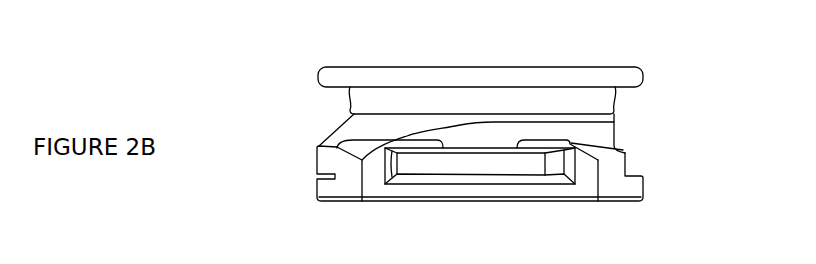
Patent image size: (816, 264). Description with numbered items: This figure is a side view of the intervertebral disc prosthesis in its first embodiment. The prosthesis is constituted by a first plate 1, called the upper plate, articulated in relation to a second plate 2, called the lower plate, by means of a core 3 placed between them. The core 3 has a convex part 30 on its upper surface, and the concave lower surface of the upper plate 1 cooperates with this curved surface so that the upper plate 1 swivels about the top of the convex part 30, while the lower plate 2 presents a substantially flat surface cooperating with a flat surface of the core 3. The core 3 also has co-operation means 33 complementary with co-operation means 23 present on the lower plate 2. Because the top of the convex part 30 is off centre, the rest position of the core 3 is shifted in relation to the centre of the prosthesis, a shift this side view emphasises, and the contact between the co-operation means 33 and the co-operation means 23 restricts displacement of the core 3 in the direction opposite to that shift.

The first plate 1 is at (654, 66).
The second plate 2 is at (303, 186).
The core 3 is at (624, 122).
The co-operation means 23 is at (623, 150).
The convex part 30 is at (342, 125).
The co-operation means 33 is at (505, 162).